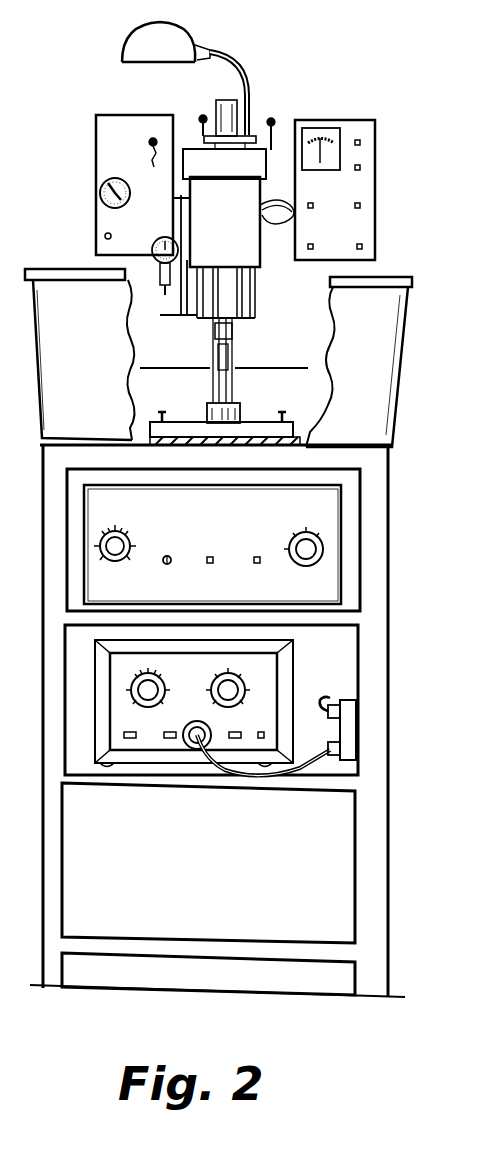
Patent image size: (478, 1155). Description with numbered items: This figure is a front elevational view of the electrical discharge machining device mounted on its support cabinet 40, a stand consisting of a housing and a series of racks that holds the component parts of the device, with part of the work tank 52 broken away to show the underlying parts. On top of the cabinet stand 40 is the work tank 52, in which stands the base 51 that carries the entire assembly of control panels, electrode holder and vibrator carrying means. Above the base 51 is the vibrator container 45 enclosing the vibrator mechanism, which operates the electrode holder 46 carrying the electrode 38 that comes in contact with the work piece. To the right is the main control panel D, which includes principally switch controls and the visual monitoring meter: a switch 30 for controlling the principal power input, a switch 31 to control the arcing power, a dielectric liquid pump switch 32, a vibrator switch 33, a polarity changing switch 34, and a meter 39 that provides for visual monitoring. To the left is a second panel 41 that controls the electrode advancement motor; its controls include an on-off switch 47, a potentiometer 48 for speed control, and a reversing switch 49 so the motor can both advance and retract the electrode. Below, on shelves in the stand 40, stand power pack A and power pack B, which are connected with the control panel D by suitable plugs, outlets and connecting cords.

The switch 30 is at (372, 246).
The switch 31 is at (308, 210).
The dielectric liquid pump switch 32 is at (310, 252).
The vibrator switch 33 is at (363, 205).
The polarity changing switch 34 is at (363, 167).
The electrode 38 is at (218, 355).
The meter 39 is at (320, 135).
The support cabinet 40 is at (390, 625).
The second panel 41 is at (106, 155).
The vibrator container 45 is at (225, 222).
The electrode holder 46 is at (232, 332).
The on-off switch 47 is at (155, 167).
The potentiometer 48 is at (100, 192).
The reversing switch 49 is at (104, 237).
The base 51 is at (258, 423).
The work tank 52 is at (380, 342).
The power pack A is at (332, 540).
The power pack B is at (287, 690).
The main control panel section D is at (440, 82).